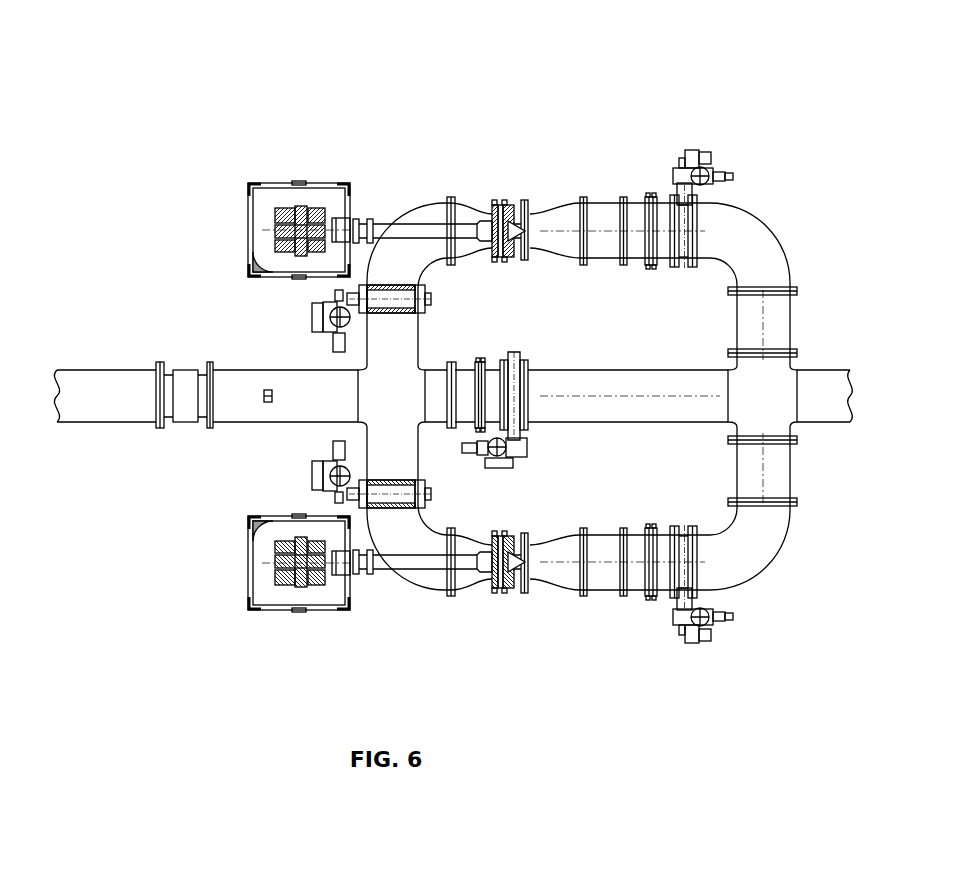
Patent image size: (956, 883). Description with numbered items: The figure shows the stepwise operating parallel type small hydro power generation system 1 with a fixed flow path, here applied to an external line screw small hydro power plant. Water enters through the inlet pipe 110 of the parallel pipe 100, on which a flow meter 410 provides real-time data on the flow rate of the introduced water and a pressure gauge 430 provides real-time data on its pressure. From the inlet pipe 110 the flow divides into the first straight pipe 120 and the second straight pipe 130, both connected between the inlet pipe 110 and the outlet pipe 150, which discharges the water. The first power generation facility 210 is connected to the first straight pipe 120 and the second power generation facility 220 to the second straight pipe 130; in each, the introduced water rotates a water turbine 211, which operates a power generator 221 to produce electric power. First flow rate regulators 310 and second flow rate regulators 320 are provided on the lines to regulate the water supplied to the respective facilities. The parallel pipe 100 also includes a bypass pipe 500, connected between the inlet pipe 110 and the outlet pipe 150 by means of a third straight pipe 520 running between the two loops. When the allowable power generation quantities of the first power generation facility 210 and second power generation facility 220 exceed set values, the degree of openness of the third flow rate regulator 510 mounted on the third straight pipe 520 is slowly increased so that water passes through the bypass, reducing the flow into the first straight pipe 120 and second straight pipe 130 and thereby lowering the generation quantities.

The stepwise operating parallel type small hydro power generation system 1 is at (453, 354).
The parallel pipe 100 is at (582, 383).
The inlet pipe 110 is at (206, 342).
The first straight pipe 120 is at (550, 576).
The second straight pipe 130 is at (550, 218).
The outlet pipe 150 is at (836, 410).
The first power generation facility 210 is at (351, 605).
The water turbine 211 is at (505, 213).
The second power generation facility 220 is at (351, 185).
The power generator 221 is at (302, 212).
The first flow rate regulator 310 is at (310, 470).
The second flow rate regulator 320 is at (310, 320).
The flow meter 410 is at (183, 370).
The pressure gauge 430 is at (265, 390).
The bypass pipe 500 is at (576, 373).
The third flow rate regulator 510 is at (522, 360).
The third straight pipe 520 is at (598, 385).